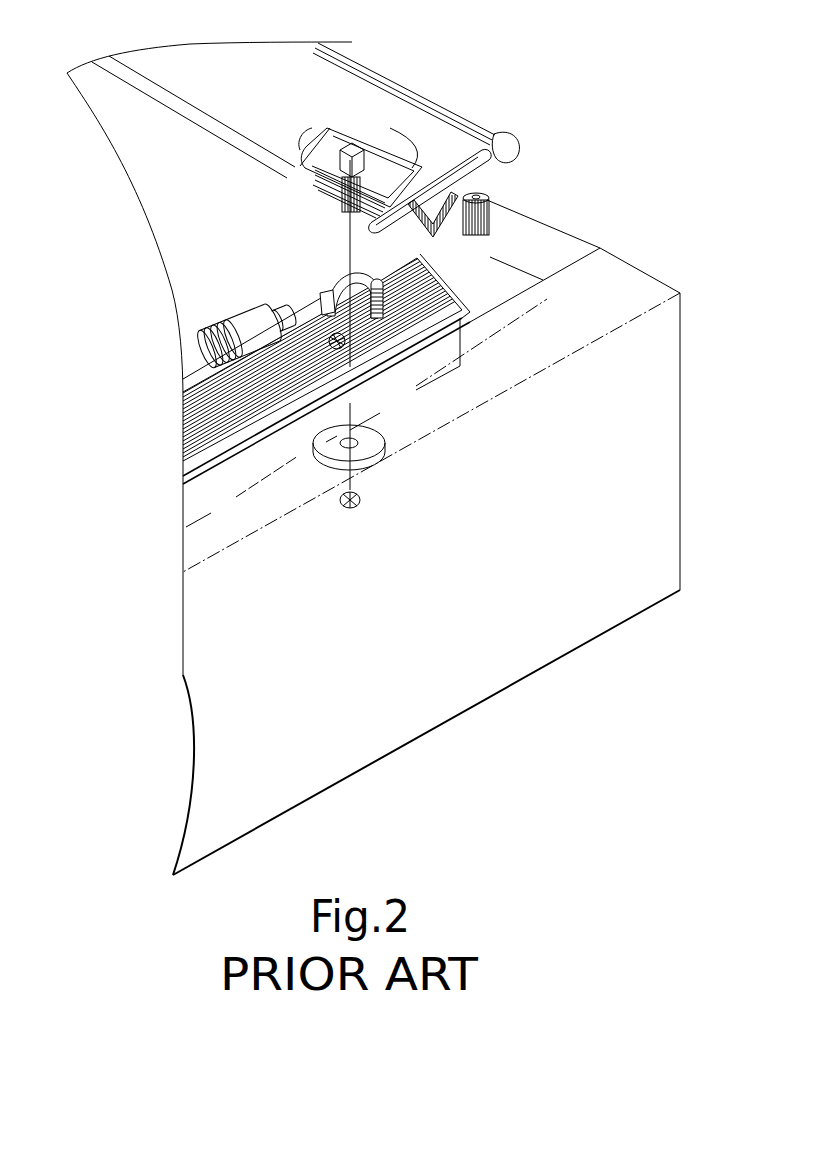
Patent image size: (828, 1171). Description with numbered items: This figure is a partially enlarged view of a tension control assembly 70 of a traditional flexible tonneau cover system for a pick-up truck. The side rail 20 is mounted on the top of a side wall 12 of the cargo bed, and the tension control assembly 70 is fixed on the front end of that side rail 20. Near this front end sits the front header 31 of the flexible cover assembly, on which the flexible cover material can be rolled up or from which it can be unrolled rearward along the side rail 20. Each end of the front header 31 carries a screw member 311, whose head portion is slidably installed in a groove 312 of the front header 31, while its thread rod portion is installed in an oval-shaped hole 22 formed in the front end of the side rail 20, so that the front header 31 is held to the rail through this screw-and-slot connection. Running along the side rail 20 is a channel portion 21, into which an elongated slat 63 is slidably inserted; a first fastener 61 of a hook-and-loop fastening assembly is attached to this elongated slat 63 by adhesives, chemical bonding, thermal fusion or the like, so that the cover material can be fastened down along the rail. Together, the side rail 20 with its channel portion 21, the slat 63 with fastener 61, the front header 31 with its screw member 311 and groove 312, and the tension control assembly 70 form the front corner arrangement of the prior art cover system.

The side wall 12 is at (608, 278).
The side rail 20 is at (196, 374).
The channel portion 21 is at (200, 393).
The oval-shaped hole 22 is at (333, 311).
The front header 31 is at (420, 97).
The screw member 311 is at (352, 148).
The groove 312 is at (335, 168).
The first fastener 61 is at (200, 434).
The elongated slat 63 is at (379, 296).
The tension control assembly 70 is at (233, 323).